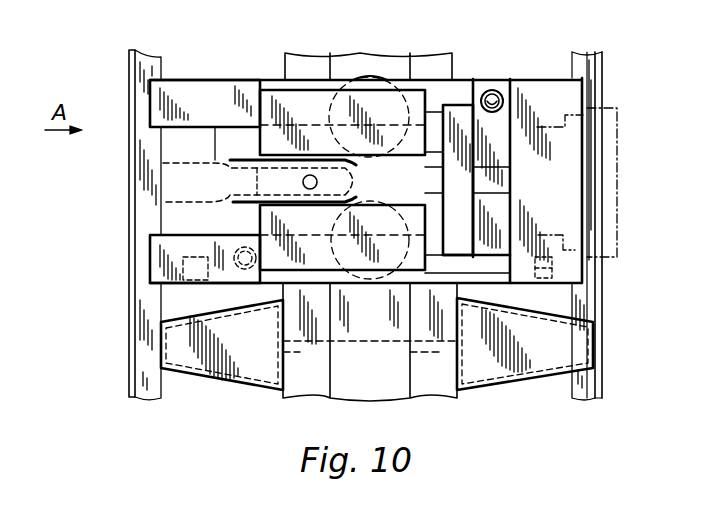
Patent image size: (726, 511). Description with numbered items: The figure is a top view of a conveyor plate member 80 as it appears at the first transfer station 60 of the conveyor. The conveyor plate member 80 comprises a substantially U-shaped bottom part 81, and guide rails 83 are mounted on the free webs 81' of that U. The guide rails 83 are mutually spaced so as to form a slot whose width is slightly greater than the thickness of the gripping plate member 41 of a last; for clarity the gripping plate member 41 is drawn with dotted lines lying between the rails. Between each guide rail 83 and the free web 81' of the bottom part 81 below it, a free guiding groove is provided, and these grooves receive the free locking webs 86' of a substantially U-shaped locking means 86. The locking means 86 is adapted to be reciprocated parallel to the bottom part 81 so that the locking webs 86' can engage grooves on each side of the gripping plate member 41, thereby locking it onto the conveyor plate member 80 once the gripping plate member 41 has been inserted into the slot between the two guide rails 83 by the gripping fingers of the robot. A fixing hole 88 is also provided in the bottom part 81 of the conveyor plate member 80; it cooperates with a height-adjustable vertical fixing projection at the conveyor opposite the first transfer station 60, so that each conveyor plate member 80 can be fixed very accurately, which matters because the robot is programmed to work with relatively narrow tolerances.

The gripping plate member 41 is at (173, 177).
The first transfer station 60 is at (124, 66).
The conveyor plate member 80 is at (548, 68).
The bottom part 81 is at (558, 148).
The free webs 81' is at (161, 159).
The guide rails 83 is at (272, 140).
The locking means 86 is at (529, 143).
The locking webs 86' is at (209, 123).
The fixing hole 88 is at (497, 93).